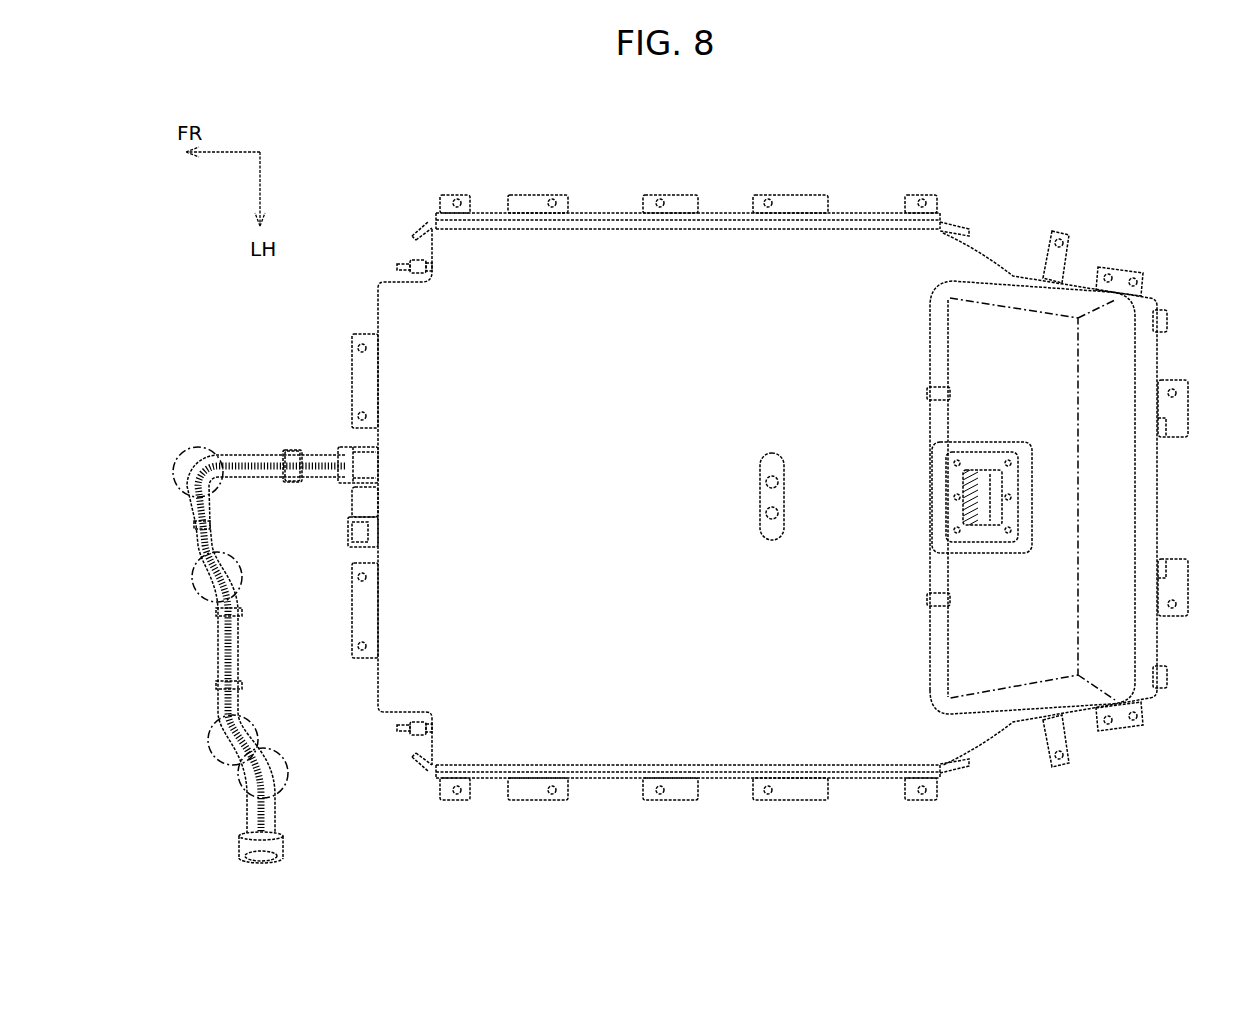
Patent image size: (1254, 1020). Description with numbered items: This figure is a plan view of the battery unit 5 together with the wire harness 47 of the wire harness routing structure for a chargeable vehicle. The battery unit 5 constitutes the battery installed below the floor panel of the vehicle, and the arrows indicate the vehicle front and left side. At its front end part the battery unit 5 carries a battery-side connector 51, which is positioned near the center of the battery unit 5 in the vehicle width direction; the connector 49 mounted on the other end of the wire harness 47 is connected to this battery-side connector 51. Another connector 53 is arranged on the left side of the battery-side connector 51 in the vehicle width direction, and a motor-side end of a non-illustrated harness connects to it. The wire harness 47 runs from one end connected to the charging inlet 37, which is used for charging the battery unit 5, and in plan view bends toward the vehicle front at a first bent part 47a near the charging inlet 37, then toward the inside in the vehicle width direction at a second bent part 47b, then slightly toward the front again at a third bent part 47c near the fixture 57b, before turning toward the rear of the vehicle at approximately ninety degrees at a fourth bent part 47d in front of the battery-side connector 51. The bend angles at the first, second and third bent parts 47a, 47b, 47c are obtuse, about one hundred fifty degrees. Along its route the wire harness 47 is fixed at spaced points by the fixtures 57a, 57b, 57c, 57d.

The battery unit 5 is at (863, 242).
The charging inlet 37 is at (262, 862).
The wire harness 47 is at (217, 635).
The first bent part 47a is at (288, 773).
The second bent part 47b is at (210, 735).
The third bent part 47c is at (193, 574).
The fourth bent part 47d is at (188, 448).
The connector 49 is at (300, 451).
The battery-side connector 51 is at (358, 449).
The connector 53 is at (358, 522).
The fixture 57a is at (242, 685).
The fixture 57b is at (244, 612).
The fixture 57c is at (212, 525).
The fixture 57d is at (290, 452).